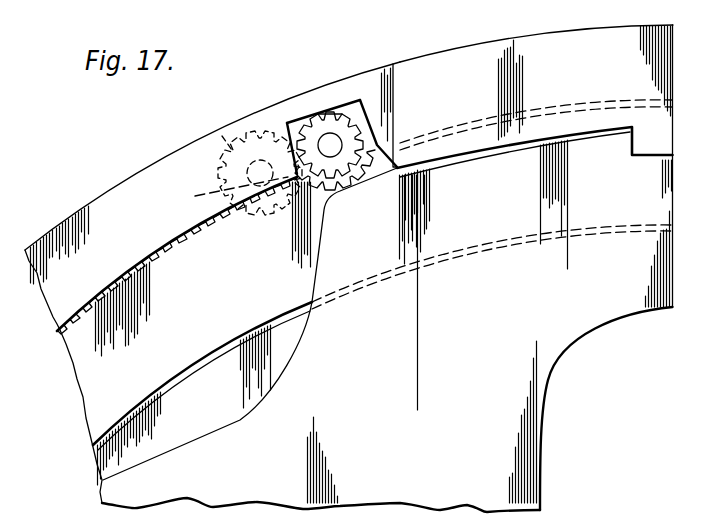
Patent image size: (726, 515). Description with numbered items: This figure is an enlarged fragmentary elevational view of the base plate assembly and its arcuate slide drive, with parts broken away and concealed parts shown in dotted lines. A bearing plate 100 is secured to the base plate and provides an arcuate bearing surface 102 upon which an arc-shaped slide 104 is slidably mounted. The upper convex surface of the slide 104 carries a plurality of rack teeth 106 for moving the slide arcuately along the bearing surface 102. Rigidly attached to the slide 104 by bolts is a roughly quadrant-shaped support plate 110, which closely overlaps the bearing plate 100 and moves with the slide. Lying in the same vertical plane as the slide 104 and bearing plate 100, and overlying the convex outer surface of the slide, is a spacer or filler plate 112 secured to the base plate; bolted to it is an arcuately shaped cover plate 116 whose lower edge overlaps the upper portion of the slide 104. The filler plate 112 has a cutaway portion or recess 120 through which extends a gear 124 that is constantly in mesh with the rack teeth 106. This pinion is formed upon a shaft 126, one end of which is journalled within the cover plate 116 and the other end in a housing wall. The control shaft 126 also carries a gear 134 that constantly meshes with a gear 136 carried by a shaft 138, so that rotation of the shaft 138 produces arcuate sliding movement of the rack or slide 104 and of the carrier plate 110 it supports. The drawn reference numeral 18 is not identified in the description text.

The annular track ring 18 is at (400, 118).
The bearing plate 100 is at (284, 350).
The arcuate bearing surface 102 is at (188, 380).
The slide 104 is at (288, 255).
The rack teeth 106 is at (133, 277).
The support plate 110 is at (587, 317).
The spacer or filler plate 112 is at (137, 188).
The cover plate 116 is at (480, 65).
The recess 120 is at (292, 121).
The gear 124 is at (323, 108).
The shaft 126 is at (332, 141).
The gear 134 is at (361, 100).
The gear 136 is at (222, 137).
The shaft 138 is at (252, 137).